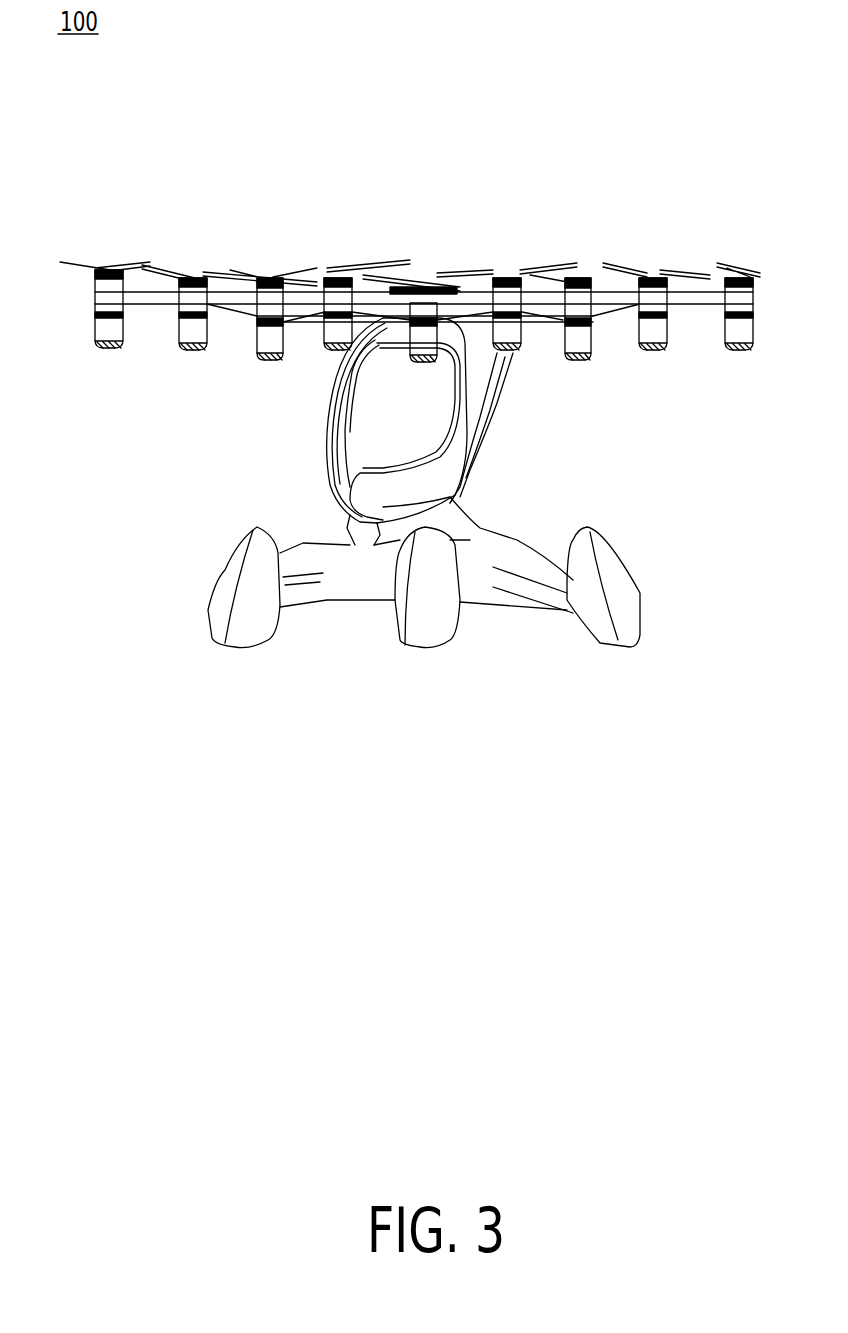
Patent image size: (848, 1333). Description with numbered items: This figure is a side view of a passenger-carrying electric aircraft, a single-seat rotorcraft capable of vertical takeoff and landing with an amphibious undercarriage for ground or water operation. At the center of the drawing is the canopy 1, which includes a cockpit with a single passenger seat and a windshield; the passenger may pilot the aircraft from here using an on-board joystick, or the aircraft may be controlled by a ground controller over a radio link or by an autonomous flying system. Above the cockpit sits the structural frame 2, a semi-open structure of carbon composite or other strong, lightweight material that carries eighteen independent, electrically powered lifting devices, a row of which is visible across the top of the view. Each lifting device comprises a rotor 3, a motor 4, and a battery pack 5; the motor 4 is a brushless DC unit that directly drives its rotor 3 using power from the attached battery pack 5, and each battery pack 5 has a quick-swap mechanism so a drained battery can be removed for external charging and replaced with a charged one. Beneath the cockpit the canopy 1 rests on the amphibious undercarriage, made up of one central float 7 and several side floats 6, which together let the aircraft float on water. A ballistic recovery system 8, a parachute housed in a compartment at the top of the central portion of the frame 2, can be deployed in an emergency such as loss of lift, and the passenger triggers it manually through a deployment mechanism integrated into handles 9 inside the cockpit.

The canopy 1 is at (327, 475).
The structural frame 2 is at (218, 295).
The rotor 3 is at (123, 272).
The motor 4 is at (118, 281).
The battery pack 5 is at (100, 336).
The side float 6 is at (237, 568).
The central float 7 is at (305, 548).
The ballistic recovery system 8 is at (403, 290).
The handles 9 is at (358, 381).